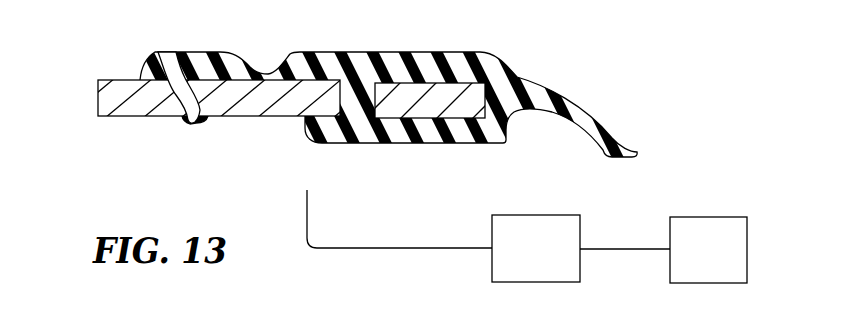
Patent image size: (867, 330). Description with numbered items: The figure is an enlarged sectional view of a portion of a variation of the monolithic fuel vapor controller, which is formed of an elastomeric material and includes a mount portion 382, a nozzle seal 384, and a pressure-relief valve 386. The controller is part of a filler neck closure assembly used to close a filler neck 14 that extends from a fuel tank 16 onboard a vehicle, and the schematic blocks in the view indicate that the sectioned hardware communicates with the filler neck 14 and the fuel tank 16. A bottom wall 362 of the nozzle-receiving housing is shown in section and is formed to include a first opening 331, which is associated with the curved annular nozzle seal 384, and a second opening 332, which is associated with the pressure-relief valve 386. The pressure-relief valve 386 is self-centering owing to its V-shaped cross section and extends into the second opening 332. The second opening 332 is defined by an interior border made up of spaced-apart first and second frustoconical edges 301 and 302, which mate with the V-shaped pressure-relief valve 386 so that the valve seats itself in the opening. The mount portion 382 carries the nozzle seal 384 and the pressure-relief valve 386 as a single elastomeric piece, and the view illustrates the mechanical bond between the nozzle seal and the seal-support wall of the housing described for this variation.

The filler neck 14 is at (536, 215).
The fuel tank 16 is at (711, 216).
The first frustoconical edge 301 is at (167, 74).
The second frustoconical edge 302 is at (205, 53).
The first opening 331 is at (479, 95).
The second opening 332 is at (181, 94).
The bottom wall 362 is at (121, 90).
The mount portion 382 is at (428, 50).
The nozzle seal 384 is at (627, 113).
The pressure-relief valve 386 is at (200, 46).